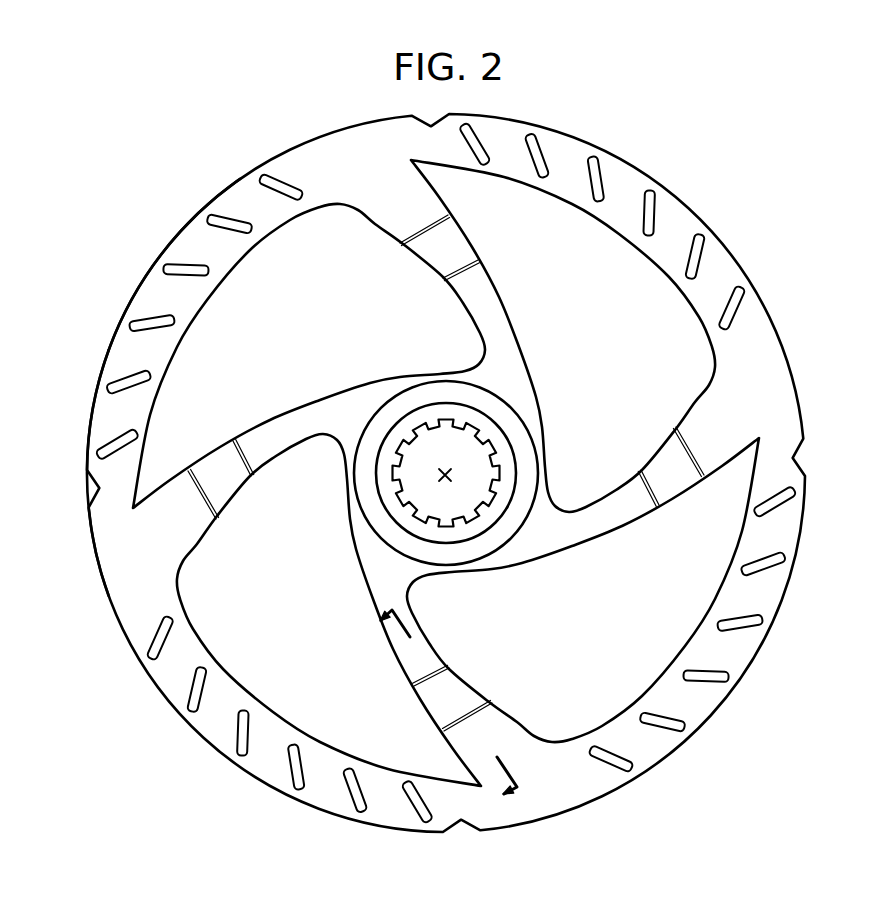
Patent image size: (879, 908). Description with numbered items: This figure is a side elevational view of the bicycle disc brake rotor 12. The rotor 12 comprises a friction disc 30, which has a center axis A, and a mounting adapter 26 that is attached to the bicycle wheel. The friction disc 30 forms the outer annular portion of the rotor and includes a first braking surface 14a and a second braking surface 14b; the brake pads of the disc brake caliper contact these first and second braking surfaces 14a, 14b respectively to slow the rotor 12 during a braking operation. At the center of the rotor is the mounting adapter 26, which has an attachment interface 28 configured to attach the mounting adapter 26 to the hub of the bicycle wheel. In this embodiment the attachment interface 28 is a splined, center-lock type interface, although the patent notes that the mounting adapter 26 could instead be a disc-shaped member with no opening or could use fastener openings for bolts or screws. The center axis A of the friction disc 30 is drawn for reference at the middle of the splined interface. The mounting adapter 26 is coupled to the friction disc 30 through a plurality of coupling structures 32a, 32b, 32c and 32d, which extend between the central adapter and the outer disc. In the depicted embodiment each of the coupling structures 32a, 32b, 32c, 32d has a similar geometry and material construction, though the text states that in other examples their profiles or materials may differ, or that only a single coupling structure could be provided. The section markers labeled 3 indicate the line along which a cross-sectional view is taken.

The bicycle disc brake rotor 12 is at (82, 182).
The friction disc 30 is at (150, 250).
The first braking surface 14a is at (153, 298).
The second braking surface 14b is at (103, 350).
The mounting adapter 26 is at (463, 307).
The attachment interface 28 is at (487, 452).
The coupling structure 32a is at (475, 675).
The coupling structure 32b is at (238, 505).
The coupling structure 32c is at (407, 267).
The coupling structure 32d is at (640, 440).
The center axis A is at (452, 475).
The section line 3- 3 is at (436, 712).